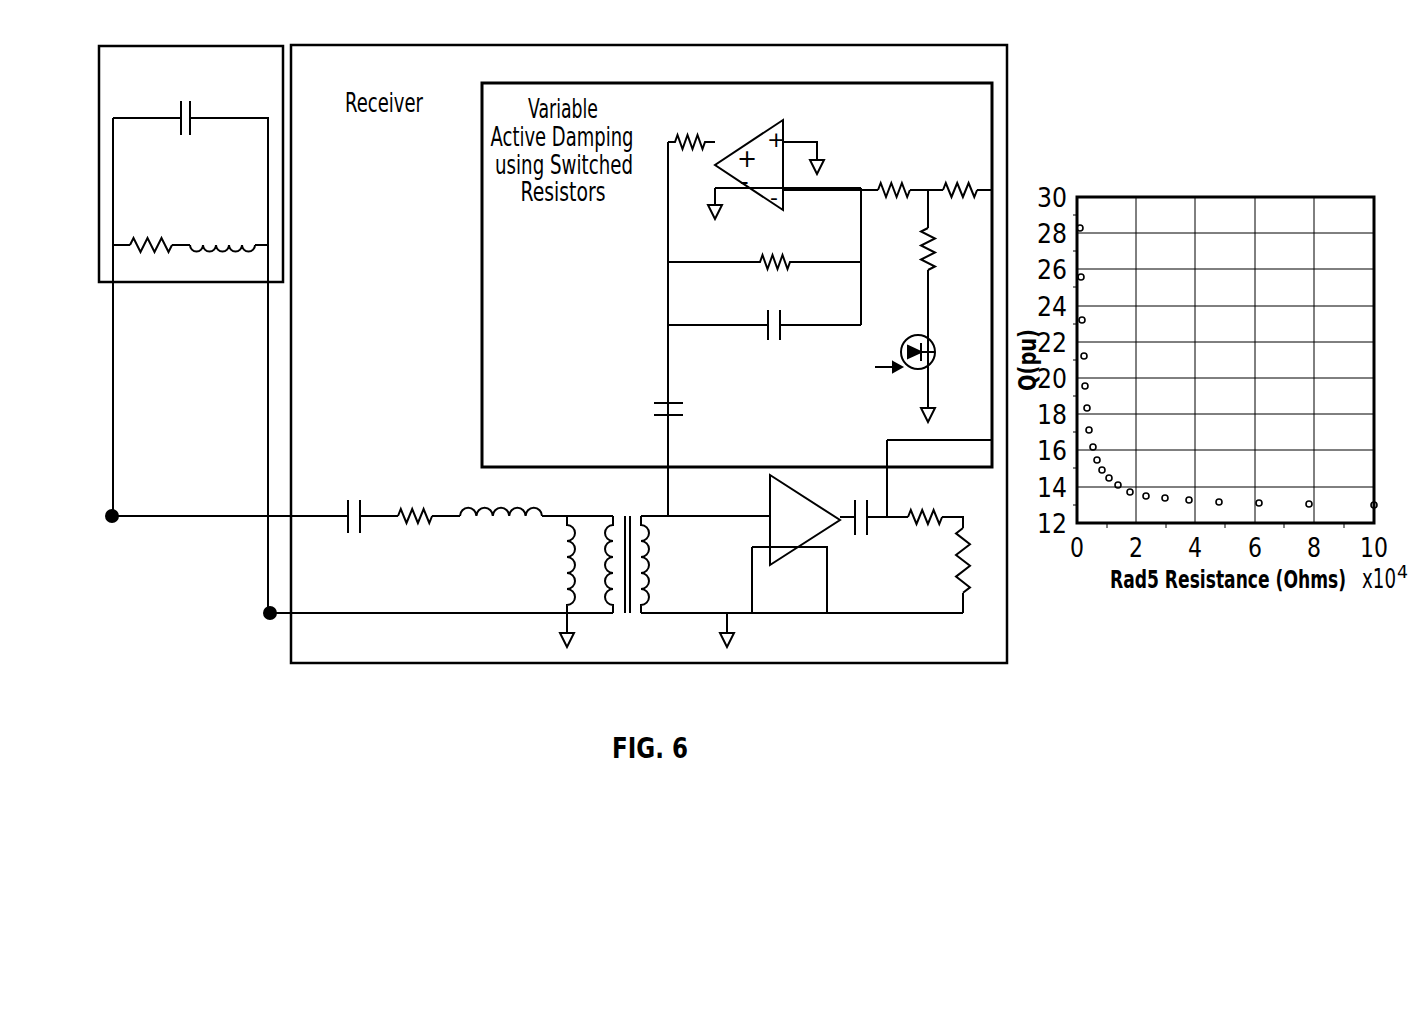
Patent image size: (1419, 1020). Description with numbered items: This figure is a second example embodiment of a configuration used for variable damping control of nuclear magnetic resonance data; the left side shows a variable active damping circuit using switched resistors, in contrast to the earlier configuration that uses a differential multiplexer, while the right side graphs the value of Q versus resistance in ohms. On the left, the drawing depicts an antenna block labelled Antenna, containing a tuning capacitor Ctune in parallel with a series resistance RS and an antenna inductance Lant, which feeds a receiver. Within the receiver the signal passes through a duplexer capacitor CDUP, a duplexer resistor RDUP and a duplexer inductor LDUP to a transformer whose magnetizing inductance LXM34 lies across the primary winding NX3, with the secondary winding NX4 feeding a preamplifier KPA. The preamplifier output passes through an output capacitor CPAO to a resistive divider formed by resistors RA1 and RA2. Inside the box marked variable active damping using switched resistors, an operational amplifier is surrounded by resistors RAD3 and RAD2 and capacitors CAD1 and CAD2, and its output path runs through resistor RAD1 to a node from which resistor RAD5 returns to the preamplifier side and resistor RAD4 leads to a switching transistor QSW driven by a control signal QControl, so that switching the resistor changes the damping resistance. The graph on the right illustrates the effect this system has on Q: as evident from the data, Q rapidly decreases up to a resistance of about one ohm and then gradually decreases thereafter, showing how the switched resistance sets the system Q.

The antenna Antenna is at (191, 329).
The tuning capacitor Ctune is at (184, 133).
The antenna series resistance RS is at (151, 221).
The antenna inductance Lant is at (222, 221).
The duplexer capacitor CDUP is at (345, 500).
The duplexer resistor RDUP is at (412, 495).
The duplexer inductor LDUP is at (501, 492).
The transformer magnetizing inductance LXM34 is at (532, 581).
The transformer primary winding NX3 is at (605, 543).
The transformer secondary winding NX4 is at (647, 543).
The preamplifier KPA is at (796, 544).
The preamplifier output capacitor CPAO is at (866, 531).
The amplifier resistor 1 RA1 is at (926, 497).
The amplifier resistor 2 RA2 is at (941, 560).
The active damping resistor 1 RAD1 is at (898, 169).
The active damping resistor 2 RAD2 is at (764, 241).
The active damping resistor 3 RAD3 is at (690, 121).
The active damping resistor 4 RAD4 is at (898, 247).
The active damping resistor 5 RAD5 is at (961, 169).
The active damping capacitor 1 CAD1 is at (764, 340).
The active damping capacitor 2 CAD2 is at (641, 402).
The switching transistor QSW is at (945, 378).
The Q control signal QControl is at (857, 350).